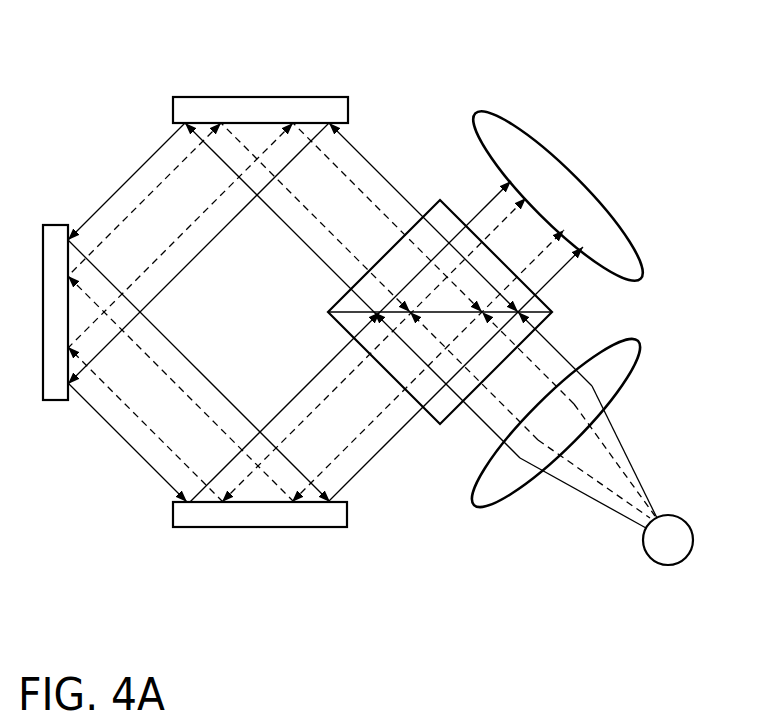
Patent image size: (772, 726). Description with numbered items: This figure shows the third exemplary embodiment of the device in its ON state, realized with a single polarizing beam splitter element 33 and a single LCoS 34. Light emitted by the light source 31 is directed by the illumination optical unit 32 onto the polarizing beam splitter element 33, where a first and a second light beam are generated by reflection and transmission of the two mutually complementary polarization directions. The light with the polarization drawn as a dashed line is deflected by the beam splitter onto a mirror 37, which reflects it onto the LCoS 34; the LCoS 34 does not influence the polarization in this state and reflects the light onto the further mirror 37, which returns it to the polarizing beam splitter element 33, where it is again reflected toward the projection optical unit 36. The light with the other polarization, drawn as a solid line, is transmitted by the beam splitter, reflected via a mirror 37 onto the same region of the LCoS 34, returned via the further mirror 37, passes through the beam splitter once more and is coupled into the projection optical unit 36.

The light source 31 is at (690, 552).
The illumination optical unit 32 is at (642, 342).
The polarizing beam splitter element 33 is at (439, 198).
The LCoS 34 is at (48, 224).
The projection optical unit 36 is at (612, 204).
The mirrors 37 is at (262, 95).